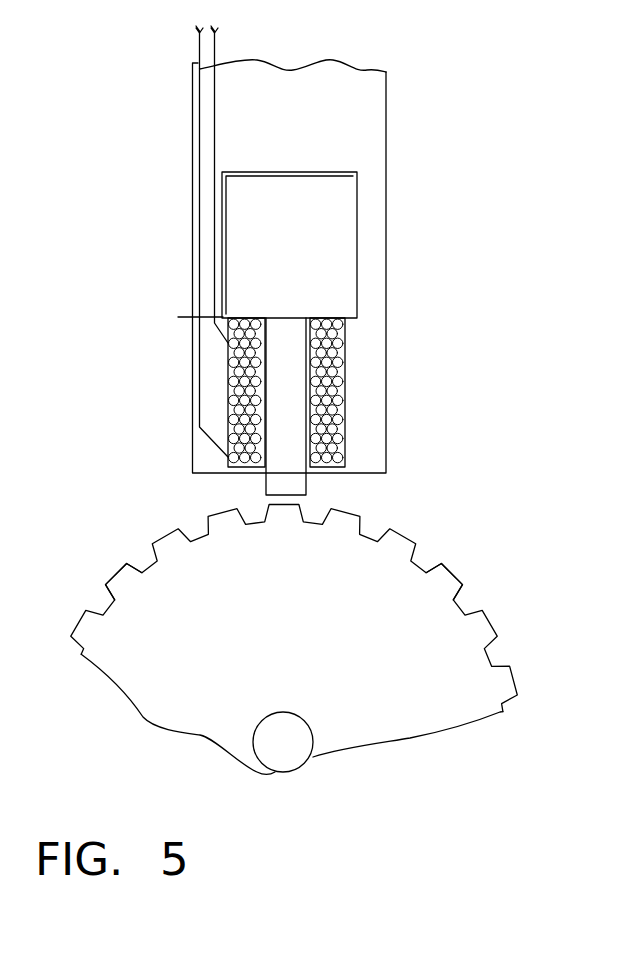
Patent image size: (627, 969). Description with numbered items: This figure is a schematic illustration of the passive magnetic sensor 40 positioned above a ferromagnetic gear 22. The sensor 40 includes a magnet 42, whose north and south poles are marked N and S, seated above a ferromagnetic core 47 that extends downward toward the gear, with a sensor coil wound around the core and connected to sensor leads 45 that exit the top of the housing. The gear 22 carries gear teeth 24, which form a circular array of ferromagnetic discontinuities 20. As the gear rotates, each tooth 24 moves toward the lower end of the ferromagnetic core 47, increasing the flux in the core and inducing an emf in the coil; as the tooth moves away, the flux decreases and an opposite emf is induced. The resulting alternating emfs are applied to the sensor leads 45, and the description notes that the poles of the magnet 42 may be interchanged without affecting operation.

The circular array of ferromagnetic discontinuities 20 is at (298, 638).
The ferromagnetic gear 22 is at (138, 585).
The gear teeth 24 is at (428, 555).
The passive magnetic sensor 40 is at (244, 264).
The magnet 42 is at (357, 247).
The sensor leads 45 is at (216, 49).
The ferromagnetic core 47 is at (287, 477).